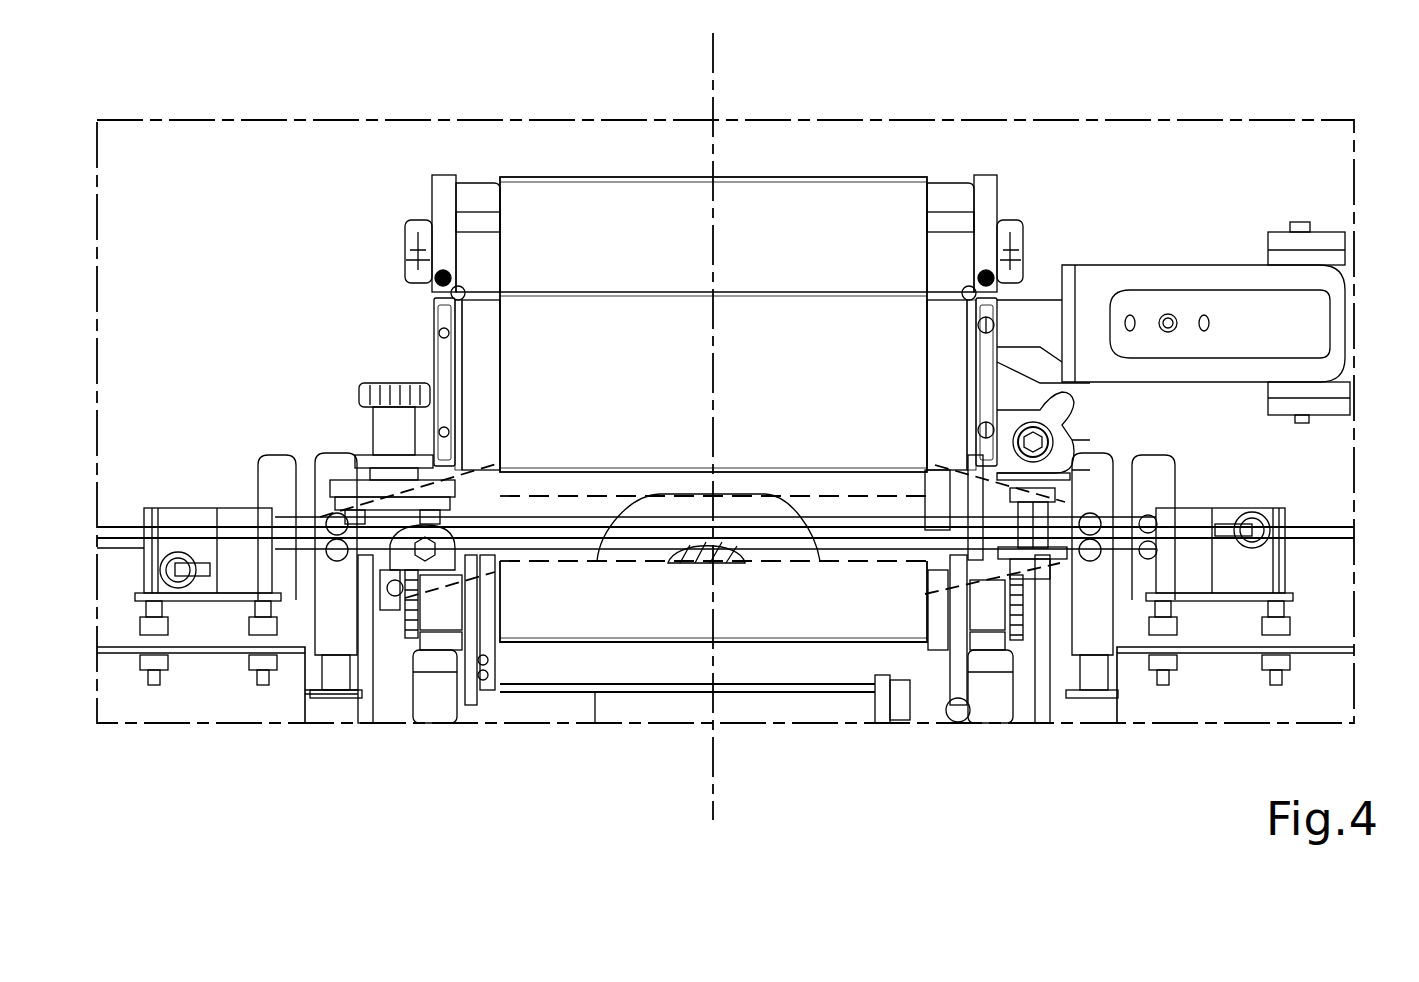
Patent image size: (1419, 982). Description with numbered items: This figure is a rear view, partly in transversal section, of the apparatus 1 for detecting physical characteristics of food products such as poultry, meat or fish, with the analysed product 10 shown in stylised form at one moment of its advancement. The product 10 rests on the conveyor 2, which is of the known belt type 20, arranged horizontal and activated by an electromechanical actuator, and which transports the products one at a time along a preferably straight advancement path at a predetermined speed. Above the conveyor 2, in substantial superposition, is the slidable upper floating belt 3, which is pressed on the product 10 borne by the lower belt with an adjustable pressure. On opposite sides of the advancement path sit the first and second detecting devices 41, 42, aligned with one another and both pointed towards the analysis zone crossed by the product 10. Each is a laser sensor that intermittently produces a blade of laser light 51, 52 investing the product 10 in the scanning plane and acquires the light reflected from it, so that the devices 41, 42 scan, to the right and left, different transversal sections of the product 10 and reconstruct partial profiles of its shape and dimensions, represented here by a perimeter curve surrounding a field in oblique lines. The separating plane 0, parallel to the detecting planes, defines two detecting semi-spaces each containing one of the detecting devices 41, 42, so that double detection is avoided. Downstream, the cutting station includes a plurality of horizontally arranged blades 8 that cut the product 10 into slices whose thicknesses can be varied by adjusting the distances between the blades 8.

The separating plane 0 is at (713, 47).
The apparatus for detecting physical characteristics of food products 1 is at (263, 222).
The conveyor 2 is at (583, 668).
The upper floating belt 3 is at (838, 330).
The blades 8 is at (119, 506).
The food product 10 is at (662, 525).
The belt 20 is at (772, 610).
The first detecting device 41 is at (1190, 535).
The second detecting device 42 is at (174, 533).
The blade of laser light 51 is at (1000, 497).
The blade of laser light 52 is at (305, 525).